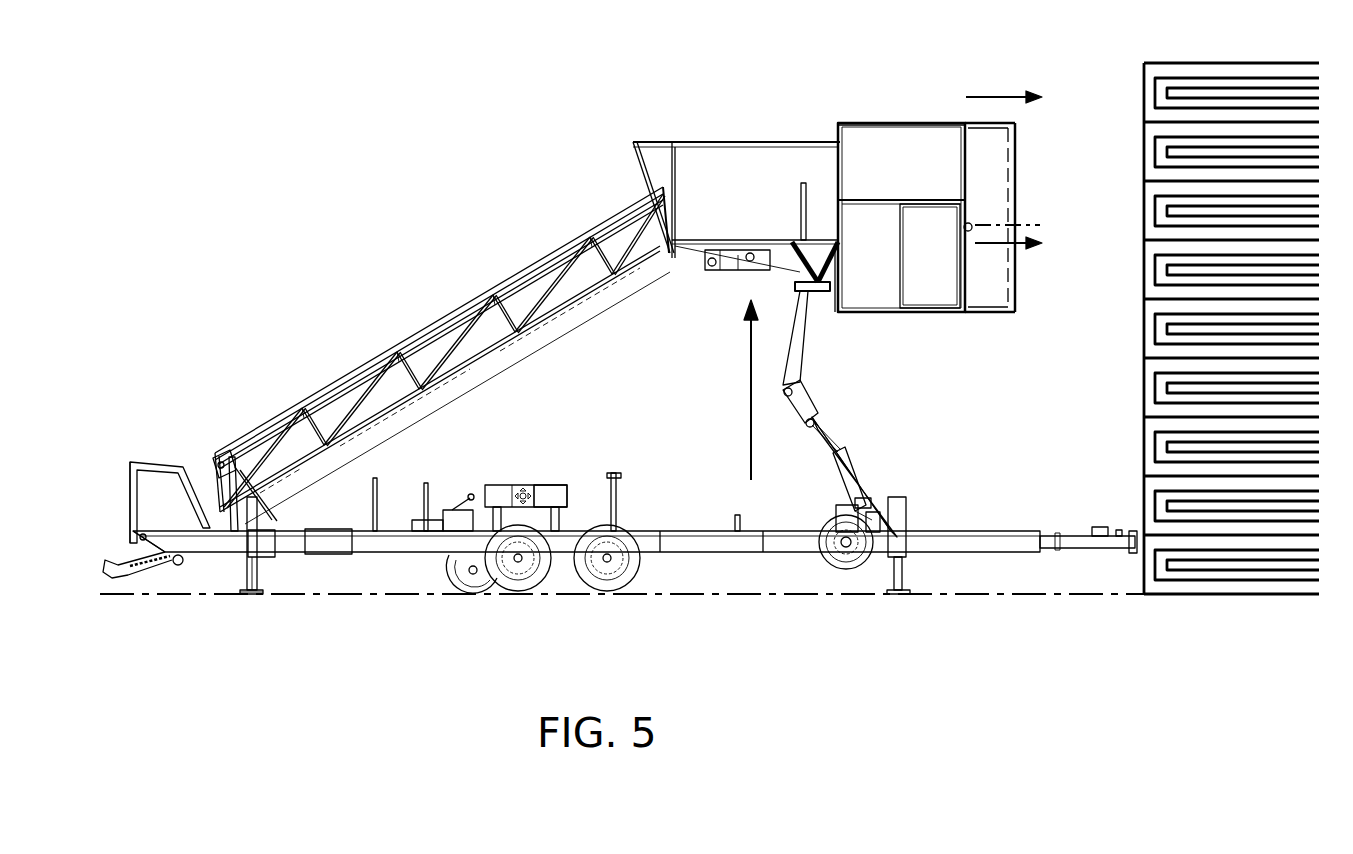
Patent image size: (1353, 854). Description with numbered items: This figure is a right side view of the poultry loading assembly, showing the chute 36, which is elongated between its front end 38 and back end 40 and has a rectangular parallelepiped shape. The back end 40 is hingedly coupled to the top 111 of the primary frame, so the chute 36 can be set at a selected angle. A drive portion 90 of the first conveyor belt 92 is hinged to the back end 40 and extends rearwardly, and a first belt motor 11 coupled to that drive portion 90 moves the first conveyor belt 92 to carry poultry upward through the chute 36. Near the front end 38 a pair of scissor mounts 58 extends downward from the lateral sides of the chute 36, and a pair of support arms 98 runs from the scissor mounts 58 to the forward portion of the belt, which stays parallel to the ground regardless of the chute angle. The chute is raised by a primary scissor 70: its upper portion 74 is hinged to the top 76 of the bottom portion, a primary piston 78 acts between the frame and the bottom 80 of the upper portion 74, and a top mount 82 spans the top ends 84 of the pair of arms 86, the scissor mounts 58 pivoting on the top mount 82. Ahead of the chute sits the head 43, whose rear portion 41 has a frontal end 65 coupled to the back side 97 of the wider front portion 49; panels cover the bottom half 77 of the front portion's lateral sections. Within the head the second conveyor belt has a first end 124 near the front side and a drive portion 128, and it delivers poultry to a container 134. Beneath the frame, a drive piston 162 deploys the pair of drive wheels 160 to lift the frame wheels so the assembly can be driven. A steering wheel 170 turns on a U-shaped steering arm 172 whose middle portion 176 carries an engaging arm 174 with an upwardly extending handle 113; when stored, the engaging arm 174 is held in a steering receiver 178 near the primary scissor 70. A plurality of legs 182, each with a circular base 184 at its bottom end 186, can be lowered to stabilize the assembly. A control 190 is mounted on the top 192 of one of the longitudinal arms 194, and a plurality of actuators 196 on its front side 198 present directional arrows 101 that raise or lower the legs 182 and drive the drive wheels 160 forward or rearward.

The first belt motor 11 is at (115, 570).
The chute 36 is at (425, 300).
The front end 38 is at (655, 187).
The back end 40 is at (210, 530).
The rear portion 41 is at (717, 140).
The head 43 is at (845, 105).
The front portion 49 is at (922, 124).
The scissor mounts 58 is at (787, 254).
The frontal end 65 is at (850, 152).
The primary scissor 70 is at (860, 423).
The upper portion 74 is at (783, 386).
The top 76 is at (815, 413).
The bottom half 77 is at (933, 284).
The primary piston 78 is at (880, 481).
The bottom 80 is at (864, 452).
The top mount 82 is at (808, 300).
The top end 84 is at (797, 303).
The arms 86 is at (863, 455).
The drive portion 90 is at (108, 552).
The first conveyor belt 92 is at (120, 520).
The back side 97 is at (838, 172).
The support arms 98 is at (833, 258).
The directional arrows 101 is at (519, 520).
The top 111 is at (216, 526).
The handle 113 is at (858, 496).
The first end 124 is at (972, 215).
The drive portion 128 is at (705, 262).
The container 134 is at (1142, 93).
The drive wheels 160 is at (490, 575).
The drive piston 162 is at (450, 510).
The steering wheel 170 is at (826, 562).
The U-shaped steering arm 172 is at (862, 545).
The engaging arm 174 is at (866, 506).
The middle portion 176 is at (843, 512).
The steering receiver 178 is at (880, 520).
The legs 182 is at (258, 575).
The circular base 184 is at (250, 596).
The bottom end 186 is at (257, 590).
The control 190 is at (552, 497).
The top 192 is at (640, 530).
The longitudinal arms 194 is at (1010, 545).
The actuators 196 is at (510, 478).
The front side 198 is at (550, 500).